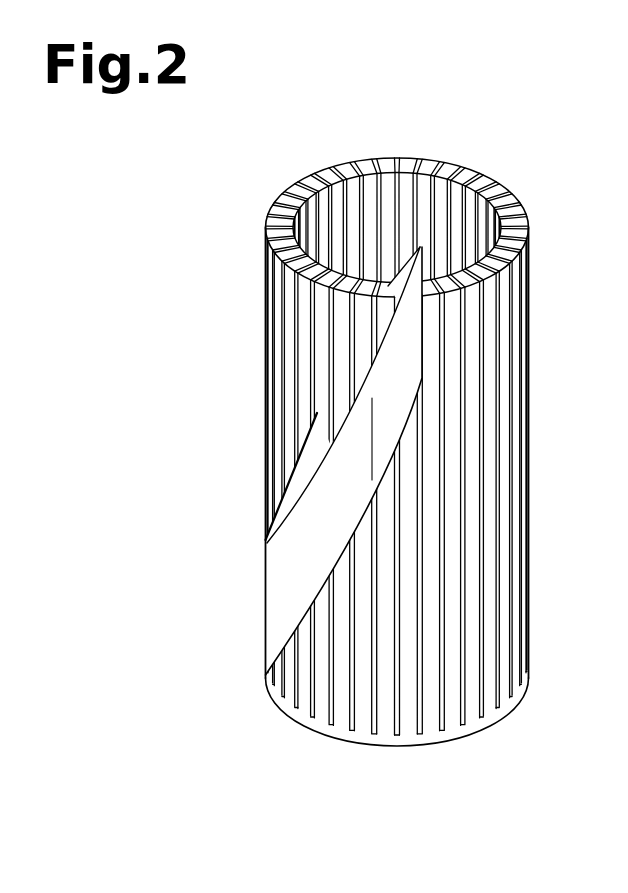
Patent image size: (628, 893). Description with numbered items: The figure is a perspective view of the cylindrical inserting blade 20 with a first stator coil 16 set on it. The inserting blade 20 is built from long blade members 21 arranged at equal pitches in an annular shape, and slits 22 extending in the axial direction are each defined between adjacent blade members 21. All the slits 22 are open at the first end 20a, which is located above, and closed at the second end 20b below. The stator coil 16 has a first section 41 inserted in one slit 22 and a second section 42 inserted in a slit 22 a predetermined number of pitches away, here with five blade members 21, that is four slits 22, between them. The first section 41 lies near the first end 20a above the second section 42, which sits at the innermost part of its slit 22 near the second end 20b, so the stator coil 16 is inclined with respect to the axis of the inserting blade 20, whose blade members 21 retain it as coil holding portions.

The inserting blade 20 is at (517, 97).
The first end 20a is at (449, 162).
The second end 20b is at (483, 720).
The blade members 21 is at (362, 157).
The slits 22 is at (312, 392).
The stator coil 16 is at (277, 581).
The first section 41 is at (401, 335).
The second section 42 is at (297, 479).